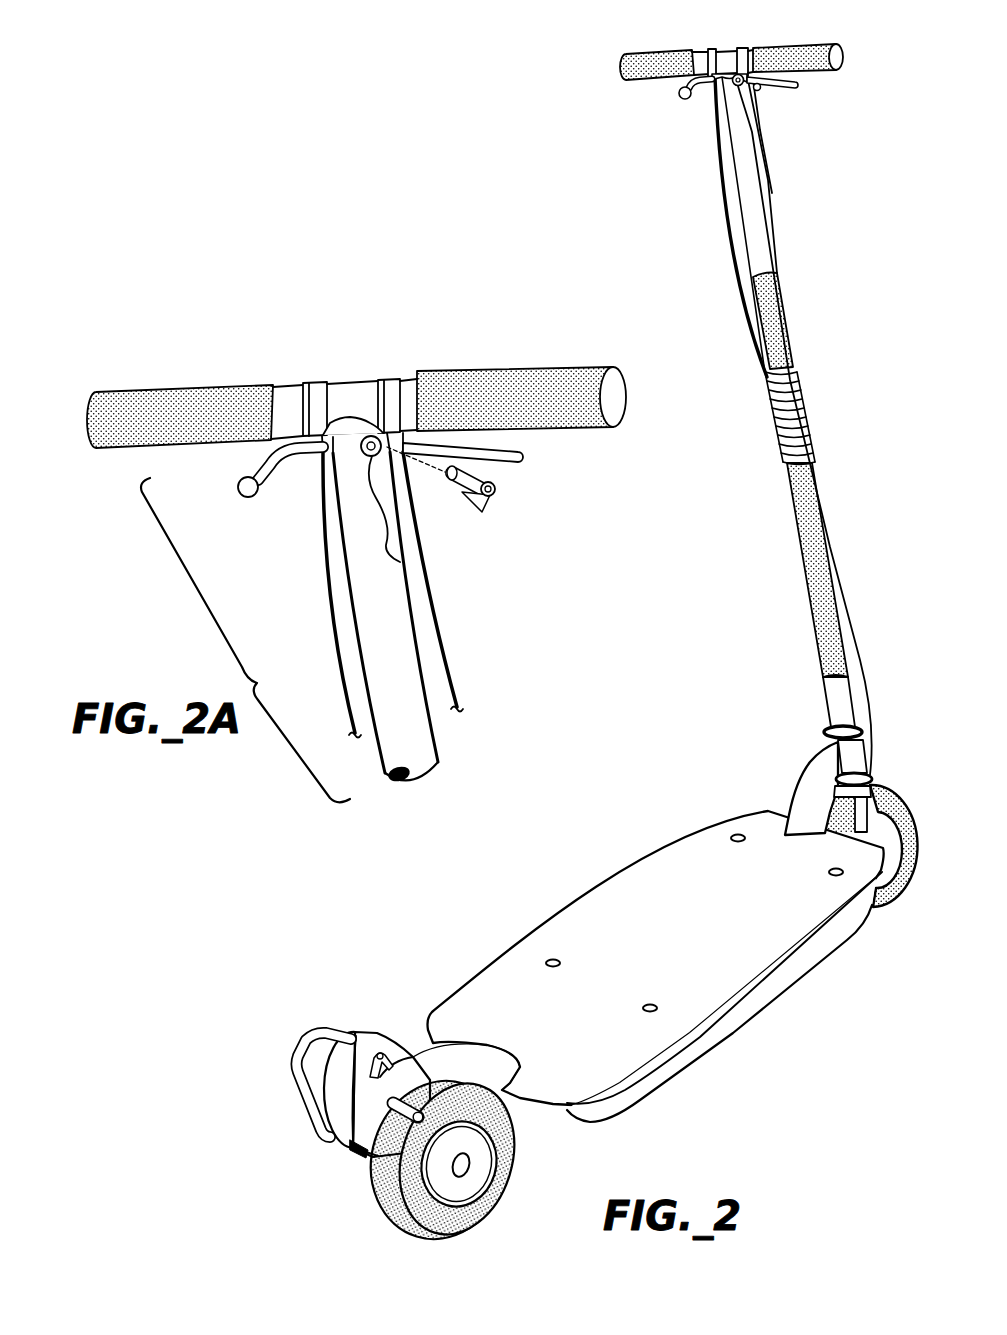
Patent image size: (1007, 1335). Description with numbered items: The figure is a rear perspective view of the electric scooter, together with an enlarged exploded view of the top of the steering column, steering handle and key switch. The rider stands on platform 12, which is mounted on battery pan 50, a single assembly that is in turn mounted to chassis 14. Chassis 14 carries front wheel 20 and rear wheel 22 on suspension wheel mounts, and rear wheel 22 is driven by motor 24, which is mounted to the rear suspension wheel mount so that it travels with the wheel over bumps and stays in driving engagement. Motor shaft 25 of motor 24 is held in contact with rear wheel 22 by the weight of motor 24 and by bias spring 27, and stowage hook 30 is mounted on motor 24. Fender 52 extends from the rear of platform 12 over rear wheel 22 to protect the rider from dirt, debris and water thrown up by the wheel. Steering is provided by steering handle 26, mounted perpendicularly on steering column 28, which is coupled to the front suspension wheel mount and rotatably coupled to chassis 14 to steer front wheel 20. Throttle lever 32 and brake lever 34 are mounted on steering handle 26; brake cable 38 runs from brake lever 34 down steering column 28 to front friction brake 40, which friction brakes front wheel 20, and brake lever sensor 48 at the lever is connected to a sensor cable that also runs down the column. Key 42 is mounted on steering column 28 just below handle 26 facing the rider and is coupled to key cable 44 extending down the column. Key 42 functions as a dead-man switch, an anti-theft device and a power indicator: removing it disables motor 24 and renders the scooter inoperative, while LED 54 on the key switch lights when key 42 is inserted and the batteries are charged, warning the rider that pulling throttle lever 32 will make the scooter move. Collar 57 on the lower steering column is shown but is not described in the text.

In FIG. 2, the platform 12 is at (697, 939).
In FIG. 2, the chassis 14 is at (818, 775).
In FIG. 2, the front wheel 20 is at (900, 882).
In FIG. 2, the rear wheel 22 is at (507, 1168).
In FIG. 2, the motor 24 is at (373, 1043).
In FIG. 2, the motor shaft 25 is at (378, 1182).
In FIG. 2A, the steering handle 26 is at (500, 370).
In FIG. 2, the bias spring 27 is at (358, 1163).
In FIG. 2, the steering column 28 is at (767, 253).
In FIG. 2A, the steering column 28 is at (427, 745).
In FIG. 2, the stowage hook 30 is at (300, 1050).
In FIG. 2, the throttle lever 32 is at (798, 90).
In FIG. 2A, the throttle lever 32 is at (522, 460).
In FIG. 2, the brake lever 34 is at (680, 97).
In FIG. 2A, the brake lever 34 is at (240, 497).
In FIG. 2, the brake cable 38 is at (722, 187).
In FIG. 2, the front friction brake 40 is at (885, 790).
In FIG. 2, the key 42 is at (736, 70).
In FIG. 2A, the key 42 is at (453, 485).
In FIG. 2, the key cable 44 is at (748, 125).
In FIG. 2A, the key cable 44 is at (400, 560).
In FIG. 2, the brake lever sensor 48 is at (723, 73).
In FIG. 2A, the brake lever sensor 48 is at (338, 423).
In FIG. 2, the battery pan 50 is at (726, 1038).
In FIG. 2, the fender 52 is at (417, 1062).
In FIG. 2, the Light Emitting Diode (LED) 54 is at (758, 91).
In FIG. 2A, the Light Emitting Diode (LED) 54 is at (497, 492).
In FIG. 2, the column collar 57 is at (835, 700).